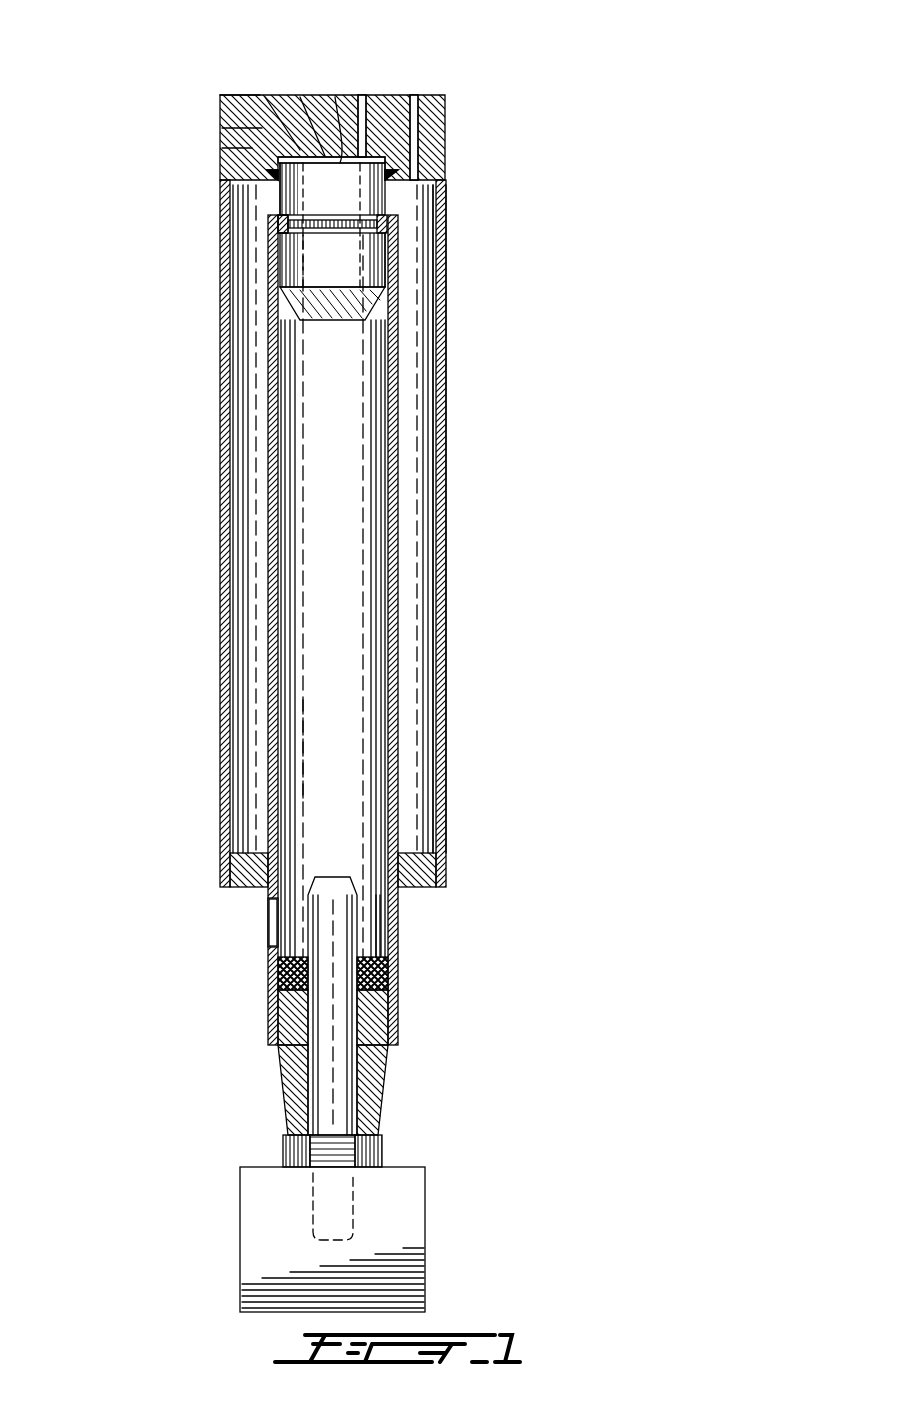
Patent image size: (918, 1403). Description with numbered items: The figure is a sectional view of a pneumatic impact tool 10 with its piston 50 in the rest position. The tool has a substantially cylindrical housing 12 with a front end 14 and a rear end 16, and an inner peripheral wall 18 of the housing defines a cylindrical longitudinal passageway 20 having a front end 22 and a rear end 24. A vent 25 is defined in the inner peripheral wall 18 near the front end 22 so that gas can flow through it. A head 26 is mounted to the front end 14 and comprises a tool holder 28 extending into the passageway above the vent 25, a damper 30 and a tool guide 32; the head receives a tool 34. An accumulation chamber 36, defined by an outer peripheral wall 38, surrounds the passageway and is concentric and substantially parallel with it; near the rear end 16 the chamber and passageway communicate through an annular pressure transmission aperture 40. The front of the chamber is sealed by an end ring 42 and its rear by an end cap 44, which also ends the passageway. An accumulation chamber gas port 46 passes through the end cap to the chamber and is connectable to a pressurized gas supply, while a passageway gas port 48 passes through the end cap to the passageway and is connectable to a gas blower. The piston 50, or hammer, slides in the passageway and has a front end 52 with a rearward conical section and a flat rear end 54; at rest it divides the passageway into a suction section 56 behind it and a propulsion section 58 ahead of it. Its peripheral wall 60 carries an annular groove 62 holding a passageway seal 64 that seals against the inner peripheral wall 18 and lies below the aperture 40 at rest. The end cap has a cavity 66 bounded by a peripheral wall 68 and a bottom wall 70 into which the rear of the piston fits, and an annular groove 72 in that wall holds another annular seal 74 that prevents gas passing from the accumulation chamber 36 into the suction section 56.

The pneumatic impact tool 10 is at (626, 286).
The housing 12 is at (447, 763).
The front end 14 is at (410, 1042).
The rear end 16 is at (203, 172).
The inner peripheral wall 18 is at (398, 608).
The longitudinal passageway 20 is at (357, 703).
The front end 22 is at (377, 910).
The rear end 24 is at (398, 232).
The vent 25 is at (273, 920).
The head 26 is at (262, 1072).
The tool holder 28 is at (333, 932).
The damper 30 is at (390, 977).
The tool guide 32 is at (367, 1077).
The tool 34 is at (268, 1232).
The accumulation chamber 36 is at (418, 450).
The outer peripheral wall 38 is at (447, 370).
The pressure transmission aperture 40 is at (396, 200).
The end ring 42 is at (243, 872).
The end cap 44 is at (222, 97).
The accumulation chamber gas port 46 is at (413, 97).
The passageway gas port 48 is at (361, 97).
The piston 50 is at (293, 192).
The front end 52 is at (323, 323).
The rear end 54 is at (265, 97).
The suction section 56 is at (300, 97).
The propulsion section 58 is at (337, 532).
The peripheral wall 60 is at (387, 267).
The annular groove 62 is at (350, 225).
The passageway seal 64 is at (280, 225).
The cavity 66 is at (396, 172).
The peripheral wall 68 is at (222, 128).
The bottom wall 70 is at (335, 97).
The annular groove 72 is at (222, 148).
The annular seal 74 is at (402, 174).